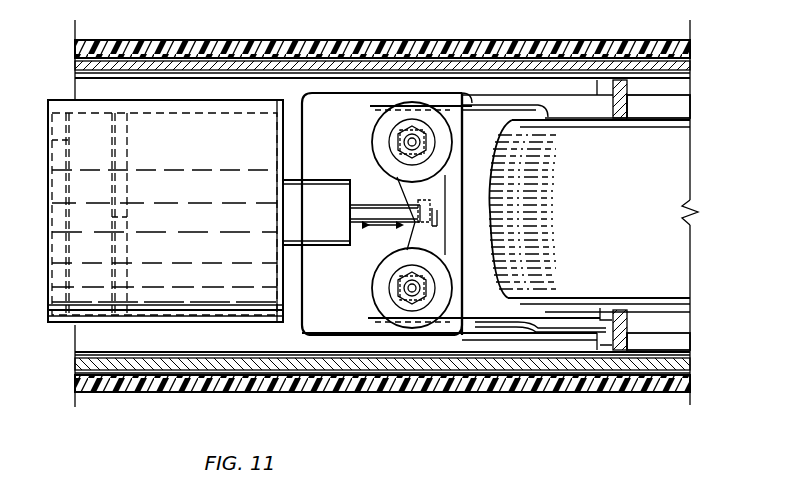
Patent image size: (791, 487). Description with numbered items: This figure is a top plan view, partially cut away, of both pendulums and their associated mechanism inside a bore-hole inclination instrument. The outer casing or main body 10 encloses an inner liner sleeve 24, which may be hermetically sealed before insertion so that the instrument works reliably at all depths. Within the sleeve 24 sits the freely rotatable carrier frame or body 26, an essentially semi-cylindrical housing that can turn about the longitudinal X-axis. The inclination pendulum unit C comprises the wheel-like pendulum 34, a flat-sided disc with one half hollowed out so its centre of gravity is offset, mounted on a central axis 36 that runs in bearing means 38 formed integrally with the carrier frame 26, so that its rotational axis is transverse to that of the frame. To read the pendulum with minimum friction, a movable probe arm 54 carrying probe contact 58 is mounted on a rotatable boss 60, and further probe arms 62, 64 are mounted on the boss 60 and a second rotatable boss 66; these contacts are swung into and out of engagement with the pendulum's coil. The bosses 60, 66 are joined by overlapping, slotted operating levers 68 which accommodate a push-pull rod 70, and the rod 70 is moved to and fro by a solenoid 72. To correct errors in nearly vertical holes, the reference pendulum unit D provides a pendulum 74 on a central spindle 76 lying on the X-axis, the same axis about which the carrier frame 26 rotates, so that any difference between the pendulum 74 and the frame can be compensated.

The main body 10 is at (380, 46).
The inner liner sleeve 24 is at (363, 364).
The carrier frame 26 is at (516, 340).
The pendulum 34 is at (586, 185).
The central axis 36 is at (619, 88).
The bearing means 38 is at (637, 86).
The probe arm 54 is at (566, 326).
The probe contact 58 is at (605, 320).
The rotatable boss 60 is at (382, 289).
The probe arm 62 is at (443, 334).
The probe arm 64 is at (490, 107).
The rotatable boss 66 is at (382, 140).
The operating levers 68 is at (446, 186).
The push-pull rod 70 is at (403, 217).
The solenoid 72 is at (243, 137).
The pendulum 74 is at (147, 158).
The central spindle 76 is at (124, 194).
The inclination pendulum unit C is at (478, 158).
The reference pendulum unit D is at (100, 331).